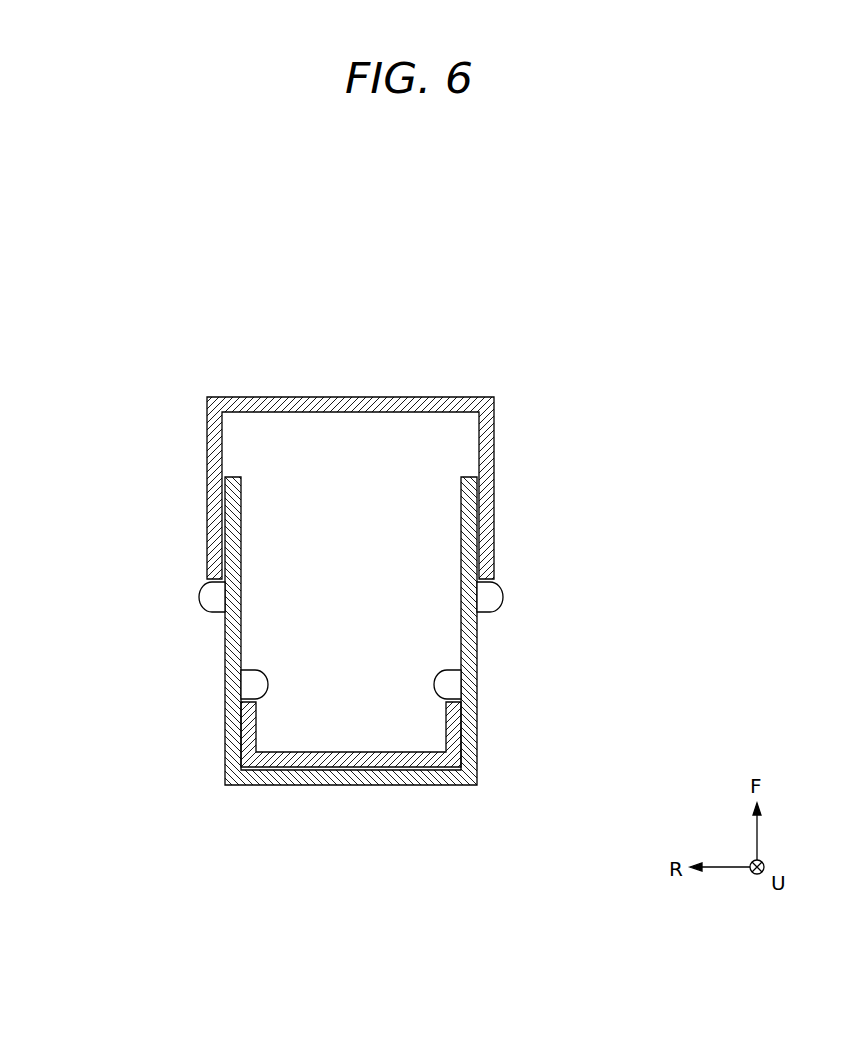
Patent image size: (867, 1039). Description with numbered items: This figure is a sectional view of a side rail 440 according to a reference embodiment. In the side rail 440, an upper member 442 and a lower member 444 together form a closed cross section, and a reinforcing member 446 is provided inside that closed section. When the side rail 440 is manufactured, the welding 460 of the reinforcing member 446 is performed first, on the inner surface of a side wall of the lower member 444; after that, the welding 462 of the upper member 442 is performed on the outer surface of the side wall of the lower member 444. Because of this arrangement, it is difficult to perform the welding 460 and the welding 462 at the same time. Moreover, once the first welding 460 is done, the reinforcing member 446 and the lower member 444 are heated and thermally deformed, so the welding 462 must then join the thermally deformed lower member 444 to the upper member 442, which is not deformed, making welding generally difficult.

The side rail 440 is at (260, 257).
The upper member 442 is at (398, 397).
The lower member 444 is at (373, 787).
The reinforcing member 446 is at (340, 752).
The welding of the reinforcing member 460 is at (263, 678).
The welding of the upper member 462 is at (198, 594).